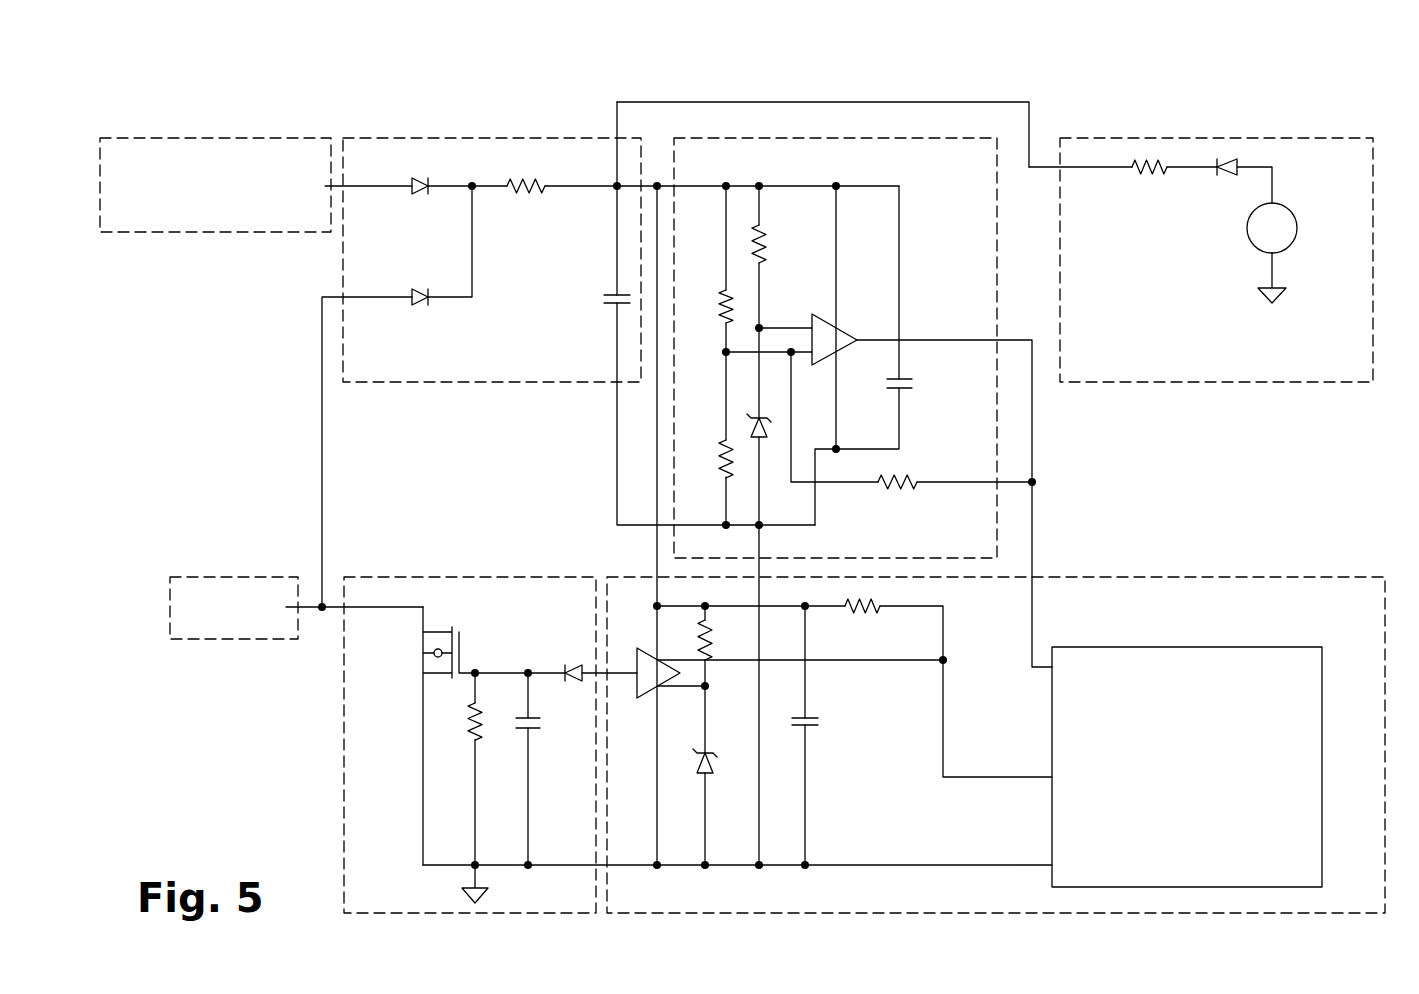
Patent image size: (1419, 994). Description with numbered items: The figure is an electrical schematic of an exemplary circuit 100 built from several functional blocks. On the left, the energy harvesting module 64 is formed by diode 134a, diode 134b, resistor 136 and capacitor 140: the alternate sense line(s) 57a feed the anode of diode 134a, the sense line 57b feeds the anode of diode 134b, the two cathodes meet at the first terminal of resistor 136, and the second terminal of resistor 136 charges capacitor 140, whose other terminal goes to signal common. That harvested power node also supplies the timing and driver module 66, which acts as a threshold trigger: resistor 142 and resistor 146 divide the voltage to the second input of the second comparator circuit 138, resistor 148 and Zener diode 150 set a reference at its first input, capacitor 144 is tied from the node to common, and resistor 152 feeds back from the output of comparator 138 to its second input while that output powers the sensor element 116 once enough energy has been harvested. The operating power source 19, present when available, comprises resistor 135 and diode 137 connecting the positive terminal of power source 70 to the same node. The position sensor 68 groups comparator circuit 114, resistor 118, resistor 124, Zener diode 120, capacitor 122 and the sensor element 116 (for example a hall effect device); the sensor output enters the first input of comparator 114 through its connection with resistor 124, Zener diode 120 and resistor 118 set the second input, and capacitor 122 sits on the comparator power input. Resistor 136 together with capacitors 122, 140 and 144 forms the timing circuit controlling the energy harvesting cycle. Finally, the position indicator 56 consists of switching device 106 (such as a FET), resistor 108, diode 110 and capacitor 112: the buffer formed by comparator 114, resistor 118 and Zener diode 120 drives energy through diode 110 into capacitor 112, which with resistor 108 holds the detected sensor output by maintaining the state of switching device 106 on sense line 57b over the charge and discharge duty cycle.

The circuit 100 is at (754, 63).
The alternate sense line(s) 57a is at (138, 138).
The sense line 57b is at (193, 577).
The energy harvesting module 64 is at (505, 138).
The timing and driver module 66 is at (899, 138).
The operating power source 19 is at (1207, 138).
The power source 70 is at (1288, 204).
The diode 134a is at (418, 176).
The diode 134b is at (420, 288).
The resistor 136 is at (538, 180).
The capacitor 140 is at (606, 298).
The resistor 142 is at (716, 295).
The resistor 148 is at (768, 254).
The resistor 146 is at (722, 441).
The Zener diode 150 is at (766, 438).
The second comparator circuit 138 is at (845, 327).
The capacitor 144 is at (904, 384).
The resistor 152 is at (920, 483).
The resistor 135 is at (1150, 176).
The diode 137 is at (1223, 178).
The position indicator 56 is at (343, 700).
The switching device 106 is at (434, 653).
The resistor 108 is at (471, 738).
The diode 110 is at (571, 666).
The capacitor 112 is at (541, 719).
The position sensor 68 is at (1168, 577).
The comparator circuit 114 is at (637, 670).
The resistor 118 is at (735, 637).
The Zener diode 120 is at (711, 751).
The capacitor 122 is at (819, 722).
The resistor 124 is at (866, 612).
The sensor element 116 is at (1205, 647).